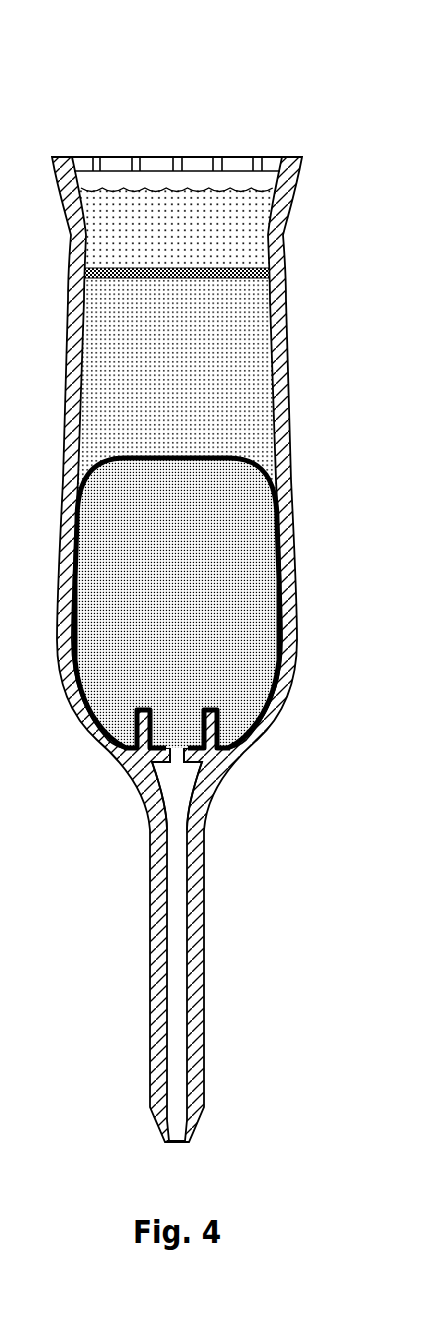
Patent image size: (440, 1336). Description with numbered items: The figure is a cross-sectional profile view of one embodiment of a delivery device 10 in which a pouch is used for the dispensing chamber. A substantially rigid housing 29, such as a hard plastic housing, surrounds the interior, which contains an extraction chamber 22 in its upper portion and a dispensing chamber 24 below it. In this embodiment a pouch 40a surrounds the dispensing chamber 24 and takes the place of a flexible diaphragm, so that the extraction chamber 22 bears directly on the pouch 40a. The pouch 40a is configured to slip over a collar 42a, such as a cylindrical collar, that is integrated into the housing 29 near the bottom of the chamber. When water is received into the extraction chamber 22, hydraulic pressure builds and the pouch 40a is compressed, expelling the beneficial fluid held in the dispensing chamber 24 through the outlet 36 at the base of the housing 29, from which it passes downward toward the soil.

The delivery device 10 is at (194, 574).
The extraction chamber 22 is at (240, 331).
The dispensing chamber 24 is at (252, 554).
The housing 29 is at (282, 443).
The outlet 36 is at (175, 755).
The pouch 40a is at (278, 487).
The collar 42a is at (222, 730).